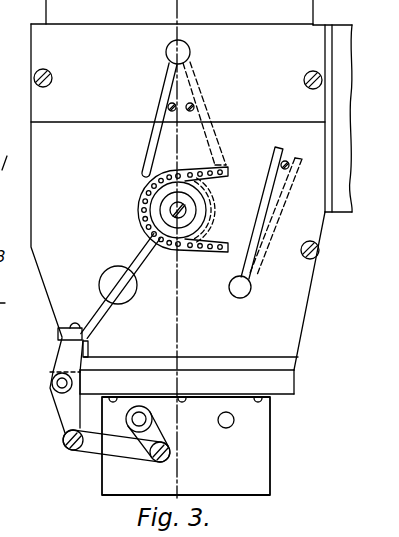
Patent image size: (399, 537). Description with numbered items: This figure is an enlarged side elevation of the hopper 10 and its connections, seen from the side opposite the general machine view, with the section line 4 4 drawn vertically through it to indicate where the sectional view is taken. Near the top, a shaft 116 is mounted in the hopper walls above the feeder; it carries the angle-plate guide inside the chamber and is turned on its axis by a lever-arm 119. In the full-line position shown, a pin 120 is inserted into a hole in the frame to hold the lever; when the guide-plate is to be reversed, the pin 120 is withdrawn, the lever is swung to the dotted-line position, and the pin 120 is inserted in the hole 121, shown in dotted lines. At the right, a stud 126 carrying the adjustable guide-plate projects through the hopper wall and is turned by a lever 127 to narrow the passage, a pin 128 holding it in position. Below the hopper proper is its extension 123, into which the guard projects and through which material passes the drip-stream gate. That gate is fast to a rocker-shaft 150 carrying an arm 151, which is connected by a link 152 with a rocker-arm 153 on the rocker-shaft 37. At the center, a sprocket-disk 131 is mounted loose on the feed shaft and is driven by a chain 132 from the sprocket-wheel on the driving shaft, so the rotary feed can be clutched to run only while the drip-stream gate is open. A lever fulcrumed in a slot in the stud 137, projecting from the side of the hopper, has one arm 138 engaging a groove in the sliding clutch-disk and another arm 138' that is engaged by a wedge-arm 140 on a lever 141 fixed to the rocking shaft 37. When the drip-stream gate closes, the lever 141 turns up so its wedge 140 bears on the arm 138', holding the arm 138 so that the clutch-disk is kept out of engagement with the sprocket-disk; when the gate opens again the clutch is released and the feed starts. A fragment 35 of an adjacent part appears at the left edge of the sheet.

The section line 4 4 is at (185, 249).
The hopper 10 is at (284, 330).
The frame part 35 is at (23, 185).
The rocker-shaft 37 is at (52, 392).
The shaft 116 is at (181, 50).
The lever-arm 119 is at (166, 80).
The pin 120 is at (168, 107).
The hole 121 is at (200, 103).
The extension of the hopper 123 is at (272, 444).
The stud 126 is at (252, 288).
The lever 127 is at (272, 193).
The pin 128 is at (286, 161).
The sprocket-disk 131 is at (212, 190).
The chain 132 is at (139, 199).
The stud 137 is at (101, 279).
The lever arm 138 is at (120, 295).
The lever arm 138' is at (130, 323).
The wedge-arm 140 is at (58, 334).
The lever 141 is at (66, 358).
The rocker-shaft 150 is at (153, 430).
The arm 151 is at (152, 435).
The link 152 is at (95, 450).
The rocker-arm 153 is at (67, 415).